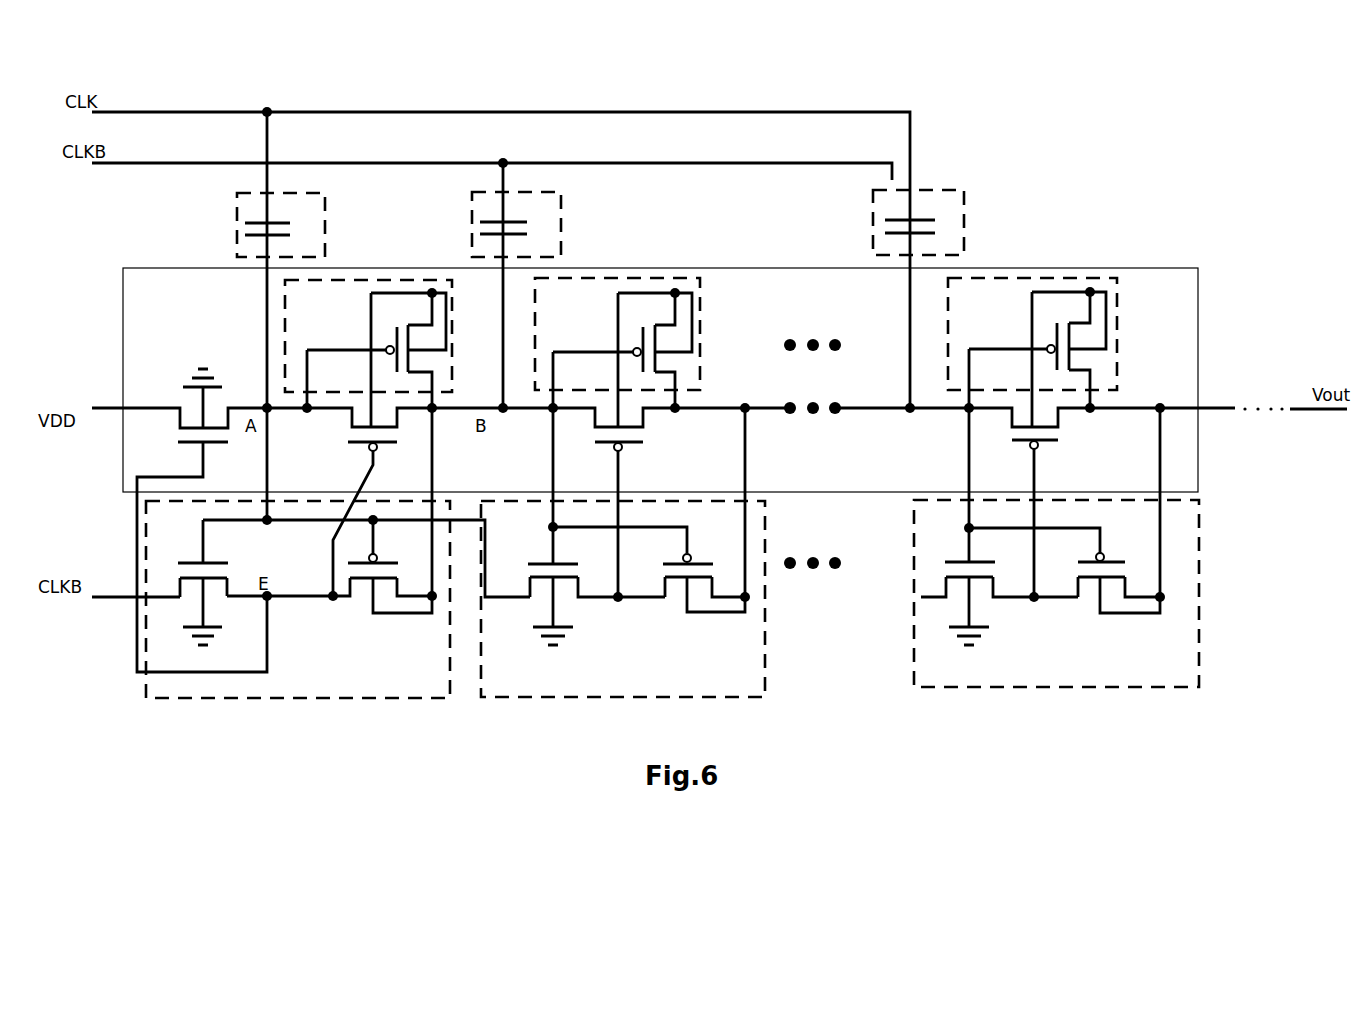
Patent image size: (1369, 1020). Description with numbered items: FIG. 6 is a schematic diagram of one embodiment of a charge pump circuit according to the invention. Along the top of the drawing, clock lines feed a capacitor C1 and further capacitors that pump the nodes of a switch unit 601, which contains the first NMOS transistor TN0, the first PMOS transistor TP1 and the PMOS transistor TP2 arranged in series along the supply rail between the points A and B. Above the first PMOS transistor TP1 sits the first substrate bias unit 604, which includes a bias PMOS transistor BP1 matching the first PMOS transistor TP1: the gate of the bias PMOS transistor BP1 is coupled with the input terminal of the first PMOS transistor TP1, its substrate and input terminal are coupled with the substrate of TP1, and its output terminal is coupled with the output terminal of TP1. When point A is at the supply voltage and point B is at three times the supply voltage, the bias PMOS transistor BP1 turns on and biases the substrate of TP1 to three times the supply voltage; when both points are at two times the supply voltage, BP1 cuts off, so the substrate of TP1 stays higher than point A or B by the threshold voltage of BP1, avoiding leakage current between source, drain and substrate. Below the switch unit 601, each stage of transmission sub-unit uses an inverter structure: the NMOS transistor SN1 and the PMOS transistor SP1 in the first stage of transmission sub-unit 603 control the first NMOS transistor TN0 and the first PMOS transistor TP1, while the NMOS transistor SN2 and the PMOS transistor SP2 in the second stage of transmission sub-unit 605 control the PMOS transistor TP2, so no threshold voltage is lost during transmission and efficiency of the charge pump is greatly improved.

The switch unit 601 is at (168, 268).
The first stage of transmission sub-unit 603 is at (398, 698).
The first substrate bias unit 604 is at (452, 335).
The second stage of transmission sub-unit 605 is at (668, 697).
The capacitor C1 is at (281, 225).
The bias PMOS transistor BP1 is at (365, 335).
The first NMOS transistor TN0 is at (172, 432).
The first PMOS transistor TP1 is at (338, 433).
The PMOS transistor TP2 is at (655, 425).
The NMOS transistor SN1 is at (192, 562).
The PMOS transistor SP1 is at (345, 605).
The NMOS transistor SN2 is at (525, 565).
The PMOS transistor SP2 is at (672, 605).